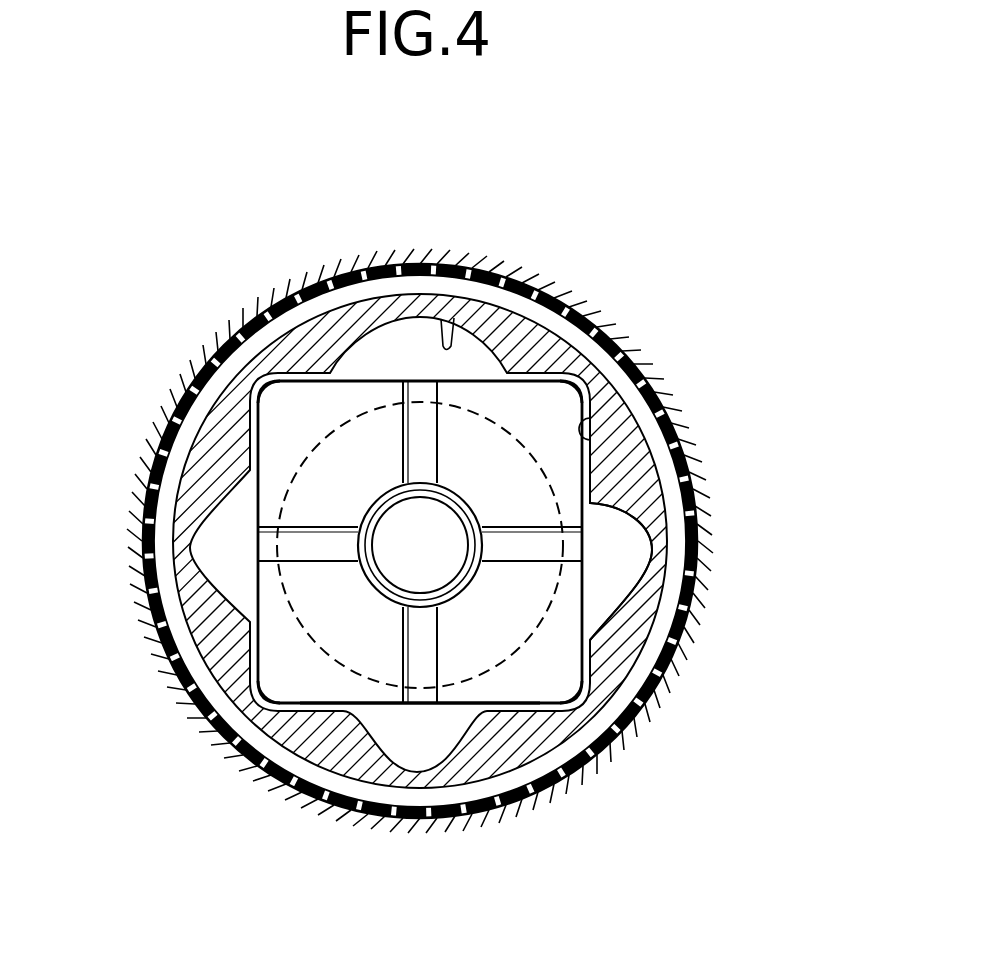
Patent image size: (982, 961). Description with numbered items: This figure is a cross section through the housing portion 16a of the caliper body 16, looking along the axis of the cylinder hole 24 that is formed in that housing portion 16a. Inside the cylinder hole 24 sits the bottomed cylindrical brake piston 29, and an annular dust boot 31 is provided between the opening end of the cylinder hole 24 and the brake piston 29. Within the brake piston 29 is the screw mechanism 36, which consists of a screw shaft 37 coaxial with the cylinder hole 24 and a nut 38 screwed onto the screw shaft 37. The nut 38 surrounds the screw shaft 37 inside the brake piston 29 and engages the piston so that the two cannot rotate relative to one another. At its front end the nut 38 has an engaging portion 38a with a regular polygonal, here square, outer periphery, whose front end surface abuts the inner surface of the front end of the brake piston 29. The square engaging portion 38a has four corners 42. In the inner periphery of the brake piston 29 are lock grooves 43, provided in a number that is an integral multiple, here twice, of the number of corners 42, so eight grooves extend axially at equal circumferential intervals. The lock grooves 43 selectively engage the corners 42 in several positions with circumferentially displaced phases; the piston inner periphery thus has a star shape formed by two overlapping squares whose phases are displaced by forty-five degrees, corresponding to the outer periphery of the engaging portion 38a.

The caliper body 16 is at (347, 262).
The housing portion 16a is at (505, 272).
The cylinder hole 24 is at (548, 302).
The brake piston 29 is at (640, 613).
The dust boot 31 is at (232, 332).
The screw mechanism 36 is at (412, 705).
The screw shaft 37 is at (388, 565).
The nut 38 is at (586, 505).
The engaging portion 38a is at (527, 682).
The corners 42 is at (270, 413).
The lock grooves 43 is at (456, 345).